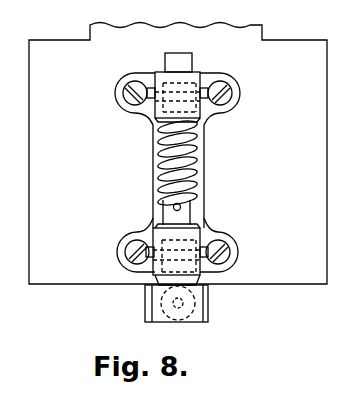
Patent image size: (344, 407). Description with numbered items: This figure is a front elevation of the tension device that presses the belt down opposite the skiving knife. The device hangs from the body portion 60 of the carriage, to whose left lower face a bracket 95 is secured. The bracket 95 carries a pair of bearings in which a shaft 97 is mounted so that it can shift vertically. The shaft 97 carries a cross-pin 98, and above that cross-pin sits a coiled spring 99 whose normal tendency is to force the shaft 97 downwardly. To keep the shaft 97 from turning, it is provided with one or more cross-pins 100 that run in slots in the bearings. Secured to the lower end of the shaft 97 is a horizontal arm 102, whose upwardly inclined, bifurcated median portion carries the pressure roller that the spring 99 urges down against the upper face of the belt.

The body portion of the carriage 60 is at (178, 154).
The bracket 95 is at (240, 93).
The shaft 97 is at (170, 214).
The cross-pin 98 is at (181, 206).
The coiled spring 99 is at (205, 154).
The cross-pins 100 is at (150, 110).
The horizontal arm 102 is at (208, 303).